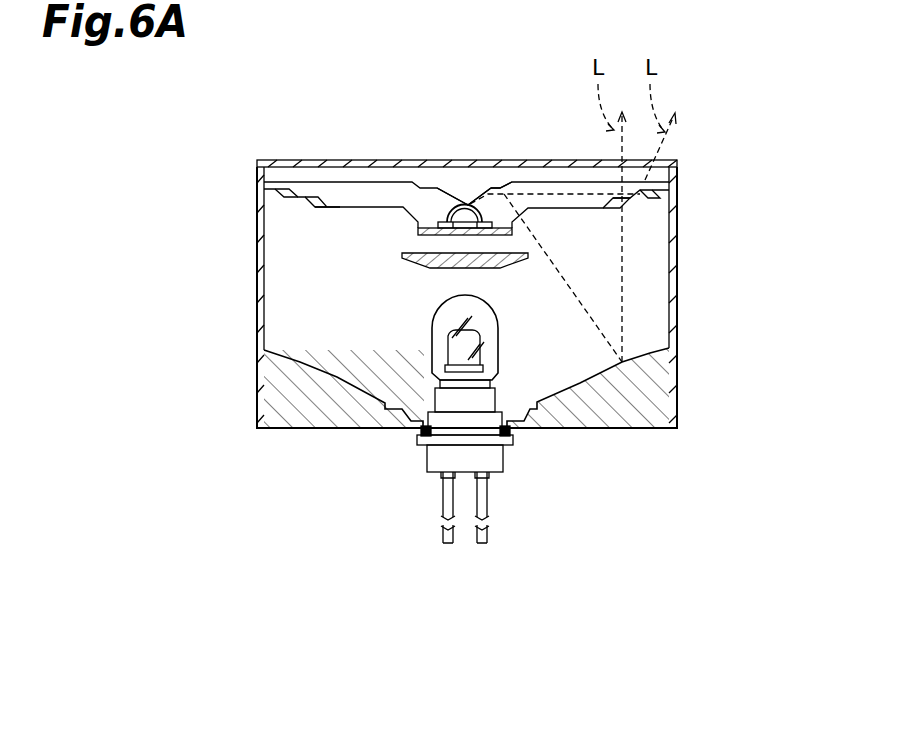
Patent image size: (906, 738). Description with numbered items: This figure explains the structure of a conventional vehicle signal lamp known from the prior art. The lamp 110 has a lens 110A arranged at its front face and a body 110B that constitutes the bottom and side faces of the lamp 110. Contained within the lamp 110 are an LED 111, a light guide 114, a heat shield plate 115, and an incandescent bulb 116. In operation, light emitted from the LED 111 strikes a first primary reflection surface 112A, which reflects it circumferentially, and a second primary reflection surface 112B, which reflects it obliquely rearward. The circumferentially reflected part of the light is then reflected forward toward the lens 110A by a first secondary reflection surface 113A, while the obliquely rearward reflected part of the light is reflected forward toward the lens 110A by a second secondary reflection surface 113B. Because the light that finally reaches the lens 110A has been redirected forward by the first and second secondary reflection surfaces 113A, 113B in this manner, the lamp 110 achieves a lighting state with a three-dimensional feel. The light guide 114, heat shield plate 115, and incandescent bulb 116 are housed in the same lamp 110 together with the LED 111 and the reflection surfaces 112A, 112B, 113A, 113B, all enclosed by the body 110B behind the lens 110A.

The lamp 110 is at (458, 260).
The lens 110A is at (322, 159).
The body 110B is at (255, 308).
The LED 111 is at (462, 226).
The first primary reflection surface 112A is at (469, 202).
The second primary reflection surface 112B is at (503, 192).
The first secondary reflection surface 113A is at (632, 204).
The second secondary reflection surface 113B is at (650, 349).
The light guide 114 is at (358, 209).
The heat shield plate 115 is at (420, 268).
The incandescent bulb 116 is at (430, 323).